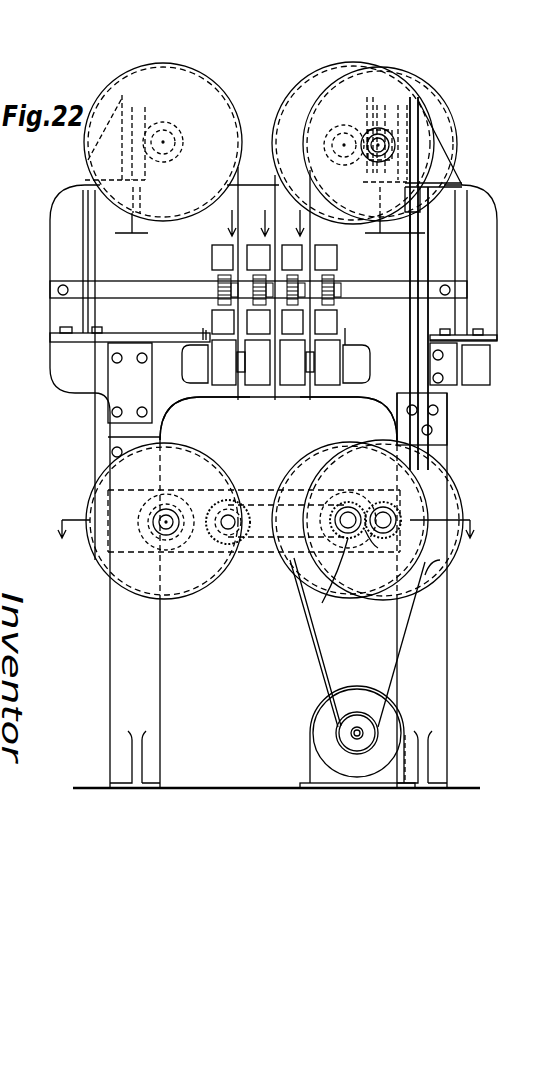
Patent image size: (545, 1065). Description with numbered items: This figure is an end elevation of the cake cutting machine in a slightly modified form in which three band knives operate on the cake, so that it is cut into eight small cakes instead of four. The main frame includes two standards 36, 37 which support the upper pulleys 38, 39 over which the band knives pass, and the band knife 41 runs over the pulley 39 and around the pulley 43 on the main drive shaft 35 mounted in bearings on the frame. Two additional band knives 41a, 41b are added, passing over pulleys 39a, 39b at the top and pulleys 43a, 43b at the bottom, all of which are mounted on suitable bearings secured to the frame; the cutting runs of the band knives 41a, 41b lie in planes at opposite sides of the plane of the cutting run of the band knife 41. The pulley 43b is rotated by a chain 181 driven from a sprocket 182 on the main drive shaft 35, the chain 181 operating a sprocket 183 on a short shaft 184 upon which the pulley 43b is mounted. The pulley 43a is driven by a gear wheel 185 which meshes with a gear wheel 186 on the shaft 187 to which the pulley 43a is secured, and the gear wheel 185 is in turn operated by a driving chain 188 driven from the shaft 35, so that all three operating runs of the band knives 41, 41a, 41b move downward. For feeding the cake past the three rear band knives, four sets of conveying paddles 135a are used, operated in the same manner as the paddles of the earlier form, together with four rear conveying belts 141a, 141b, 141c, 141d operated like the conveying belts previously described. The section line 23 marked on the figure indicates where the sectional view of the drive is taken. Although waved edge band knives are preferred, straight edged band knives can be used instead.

The pulley 39 is at (338, 70).
The pulley 39a is at (190, 80).
The pulley 39b is at (438, 88).
The conveying paddles 135a is at (212, 260).
The rear conveying belt 141a is at (340, 350).
The rear conveying belt 141b is at (345, 372).
The rear conveying belt 141c is at (203, 340).
The rear conveying belt 141d is at (210, 372).
The band knife 41 is at (270, 420).
The band knife 41a is at (245, 427).
The band knife 41b is at (314, 424).
The pulley 43 is at (288, 566).
The pulley 43a is at (185, 592).
The pulley 43b is at (440, 576).
The gear wheel 185 is at (216, 505).
The gear wheel 186 is at (200, 538).
The shaft 187 is at (165, 525).
The driving chain 188 is at (280, 542).
The chain 181 is at (372, 545).
The sprocket 182 is at (336, 508).
The sprocket 183 is at (400, 515).
The main drive shaft 35 is at (333, 581).
The standard 36 is at (300, 585).
The standard 37 is at (309, 628).
The pulley 38 is at (318, 727).
The short shaft 184 is at (428, 578).
The section line 23 is at (269, 539).